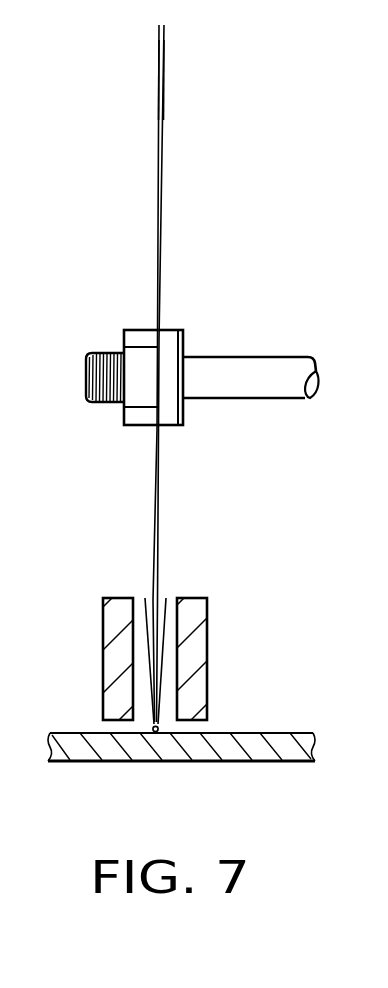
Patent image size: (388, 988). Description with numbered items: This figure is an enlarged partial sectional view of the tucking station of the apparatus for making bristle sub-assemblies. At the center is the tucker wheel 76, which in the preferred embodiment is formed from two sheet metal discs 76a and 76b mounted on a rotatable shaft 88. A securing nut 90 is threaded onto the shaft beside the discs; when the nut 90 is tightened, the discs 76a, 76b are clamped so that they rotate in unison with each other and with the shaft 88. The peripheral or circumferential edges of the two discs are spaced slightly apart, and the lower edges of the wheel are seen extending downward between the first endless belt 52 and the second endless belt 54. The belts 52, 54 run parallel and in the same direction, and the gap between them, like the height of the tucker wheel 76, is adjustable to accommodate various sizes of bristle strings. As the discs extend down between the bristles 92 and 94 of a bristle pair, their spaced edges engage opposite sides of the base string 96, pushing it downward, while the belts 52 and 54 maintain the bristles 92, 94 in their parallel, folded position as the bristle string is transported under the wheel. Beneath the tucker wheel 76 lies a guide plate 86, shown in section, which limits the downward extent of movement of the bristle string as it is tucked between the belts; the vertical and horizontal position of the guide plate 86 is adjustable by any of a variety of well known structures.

The tucker wheel 76 is at (183, 167).
The sheet metal disc 76a is at (158, 60).
The sheet metal disc 76b is at (165, 60).
The securing nut 90 is at (133, 330).
The rotatable shaft 88 is at (267, 356).
The first endless belt 52 is at (104, 666).
The second endless belt 54 is at (209, 662).
The bristle 92 is at (146, 633).
The bristle 94 is at (166, 637).
The base string 96 is at (156, 733).
The guide plate 86 is at (285, 762).